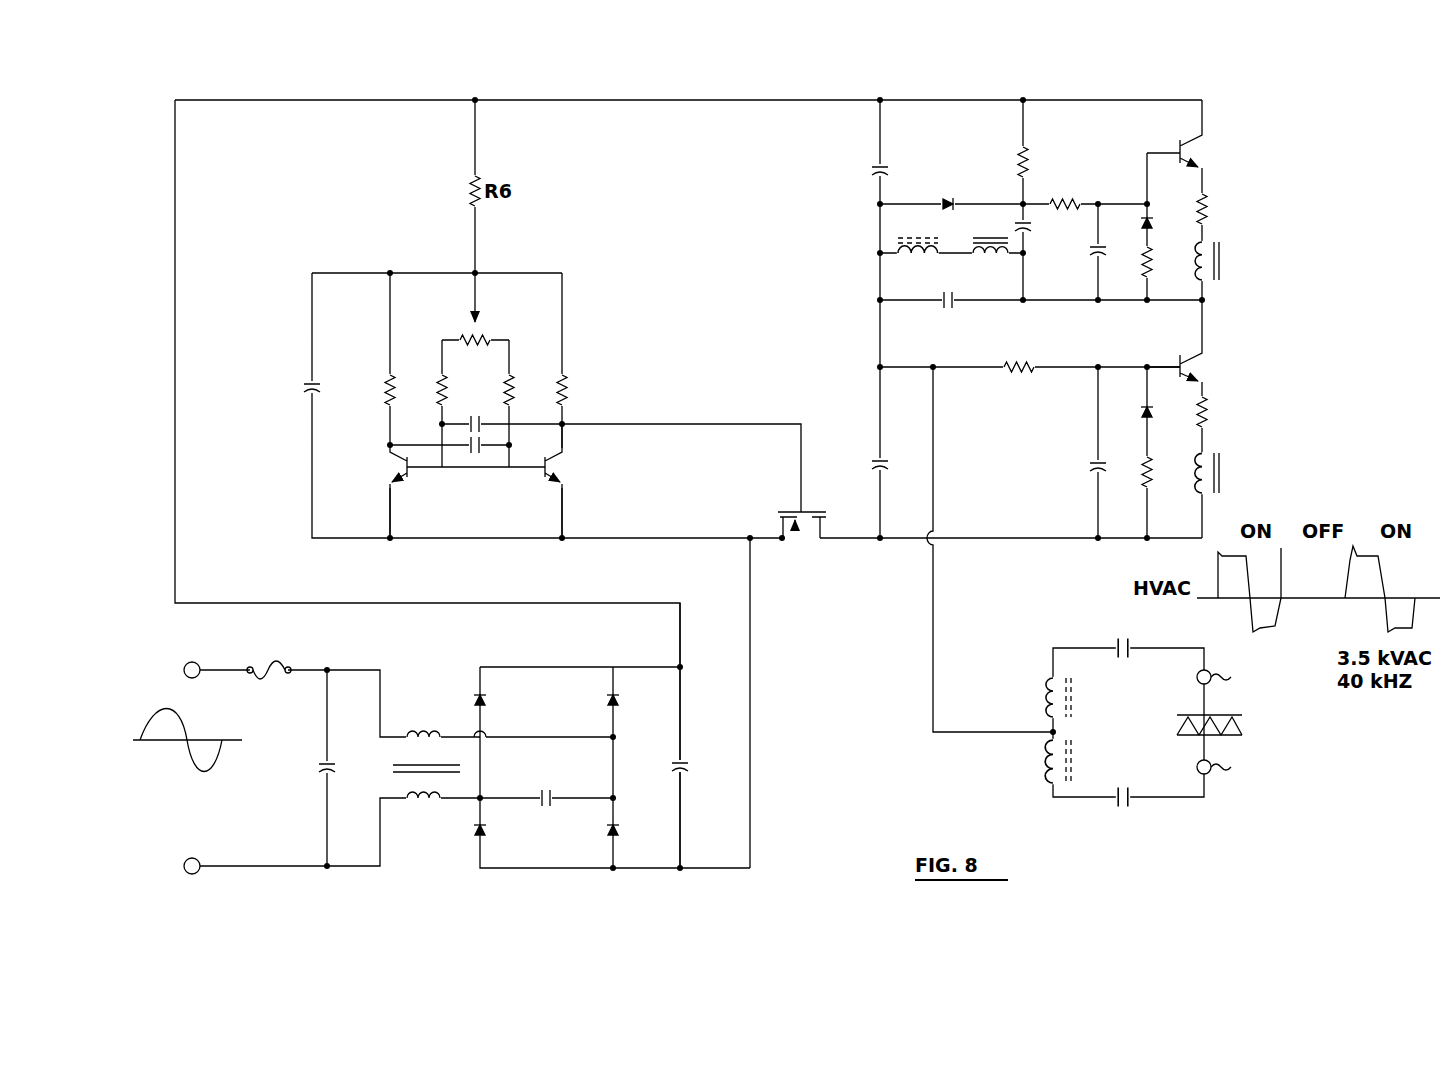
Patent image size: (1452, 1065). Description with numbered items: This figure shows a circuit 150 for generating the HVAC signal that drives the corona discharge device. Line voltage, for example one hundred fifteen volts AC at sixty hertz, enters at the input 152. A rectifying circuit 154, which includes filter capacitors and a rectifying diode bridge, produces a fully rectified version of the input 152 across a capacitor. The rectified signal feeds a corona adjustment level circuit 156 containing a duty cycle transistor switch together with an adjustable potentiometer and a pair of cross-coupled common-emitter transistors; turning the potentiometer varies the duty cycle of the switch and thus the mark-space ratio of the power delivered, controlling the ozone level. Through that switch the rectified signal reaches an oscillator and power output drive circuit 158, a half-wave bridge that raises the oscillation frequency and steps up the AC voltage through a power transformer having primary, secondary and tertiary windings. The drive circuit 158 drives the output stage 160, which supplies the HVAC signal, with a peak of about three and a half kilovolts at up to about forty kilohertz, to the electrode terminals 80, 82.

The circuit 150 is at (806, 778).
The input 152 is at (182, 698).
The rectifying circuit 154 is at (458, 857).
The corona adjustment level circuit 156 is at (588, 258).
The oscillator and power output drive circuit 158 is at (1258, 142).
The output stage 160 is at (1155, 715).
The electrode terminal 80 is at (1242, 714).
The electrode terminal 82 is at (1242, 737).